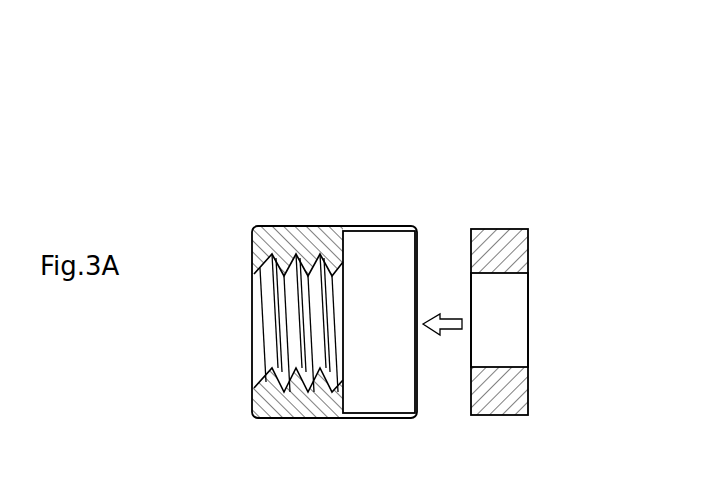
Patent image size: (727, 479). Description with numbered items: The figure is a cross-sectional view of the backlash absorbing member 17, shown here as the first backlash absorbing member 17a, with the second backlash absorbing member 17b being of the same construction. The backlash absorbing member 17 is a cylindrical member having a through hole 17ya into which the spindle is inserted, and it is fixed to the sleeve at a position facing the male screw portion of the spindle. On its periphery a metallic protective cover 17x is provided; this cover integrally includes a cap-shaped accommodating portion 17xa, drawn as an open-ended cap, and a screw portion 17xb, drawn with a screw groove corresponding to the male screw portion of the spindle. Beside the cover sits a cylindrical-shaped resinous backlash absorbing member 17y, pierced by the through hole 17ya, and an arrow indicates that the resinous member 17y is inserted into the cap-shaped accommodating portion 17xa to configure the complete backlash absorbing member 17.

The backlash absorbing member 17 is at (438, 256).
The first backlash absorbing member 17a is at (438, 225).
The second backlash absorbing member 17b is at (522, 92).
The metallic protective cover 17x is at (334, 258).
The cap-shaped accommodating portion 17xa is at (384, 258).
The screw portion 17xb is at (299, 292).
The resinous backlash absorbing member 17y is at (499, 229).
The through hole 17ya is at (522, 292).